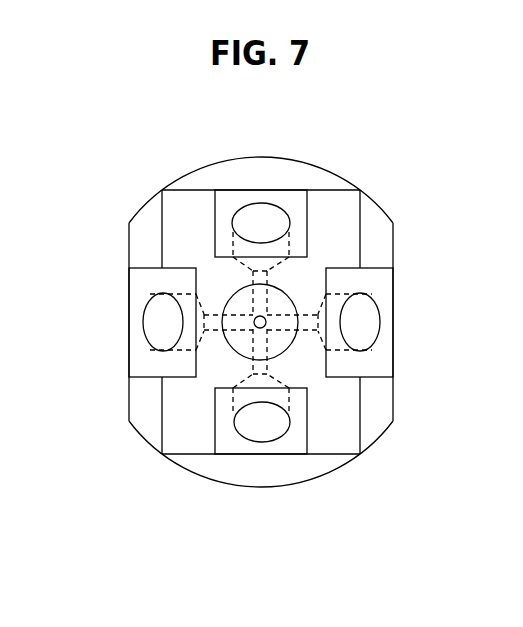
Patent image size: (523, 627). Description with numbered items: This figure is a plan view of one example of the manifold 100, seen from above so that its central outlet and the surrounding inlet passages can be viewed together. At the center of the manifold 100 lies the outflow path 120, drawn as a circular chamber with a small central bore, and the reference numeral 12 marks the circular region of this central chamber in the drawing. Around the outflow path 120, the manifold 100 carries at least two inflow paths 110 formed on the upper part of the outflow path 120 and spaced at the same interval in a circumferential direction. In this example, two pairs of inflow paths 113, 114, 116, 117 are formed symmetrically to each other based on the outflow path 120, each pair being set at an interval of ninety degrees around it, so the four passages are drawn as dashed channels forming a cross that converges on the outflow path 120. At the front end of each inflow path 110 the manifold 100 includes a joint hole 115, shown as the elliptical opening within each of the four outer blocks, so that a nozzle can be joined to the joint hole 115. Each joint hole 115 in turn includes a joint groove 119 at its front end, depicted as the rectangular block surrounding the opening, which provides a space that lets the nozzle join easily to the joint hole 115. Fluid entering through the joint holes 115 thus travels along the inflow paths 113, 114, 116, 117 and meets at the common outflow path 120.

The manifold 100 is at (107, 177).
The inflow path 110 is at (362, 528).
The joint groove 119 is at (296, 203).
The joint hole 115 is at (270, 220).
The central valve chamber 12 is at (252, 313).
The outflow path 120 is at (256, 319).
The inflow path 116 is at (260, 330).
The inflow path 114 is at (287, 312).
The inflow path 113 is at (233, 343).
The inflow path 117 is at (297, 293).